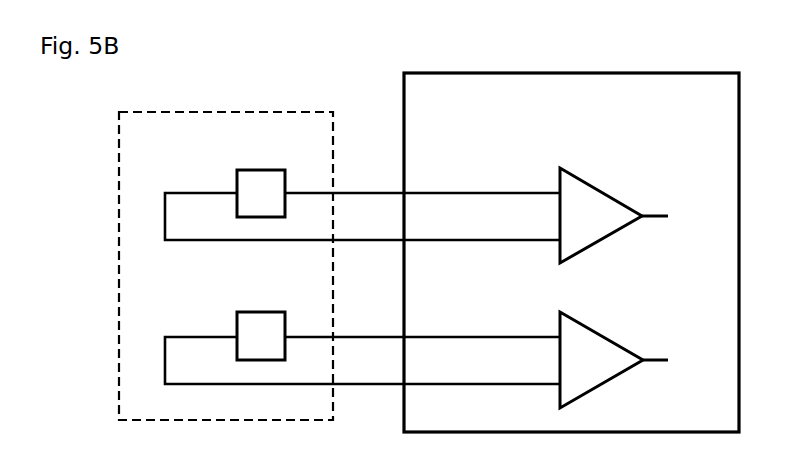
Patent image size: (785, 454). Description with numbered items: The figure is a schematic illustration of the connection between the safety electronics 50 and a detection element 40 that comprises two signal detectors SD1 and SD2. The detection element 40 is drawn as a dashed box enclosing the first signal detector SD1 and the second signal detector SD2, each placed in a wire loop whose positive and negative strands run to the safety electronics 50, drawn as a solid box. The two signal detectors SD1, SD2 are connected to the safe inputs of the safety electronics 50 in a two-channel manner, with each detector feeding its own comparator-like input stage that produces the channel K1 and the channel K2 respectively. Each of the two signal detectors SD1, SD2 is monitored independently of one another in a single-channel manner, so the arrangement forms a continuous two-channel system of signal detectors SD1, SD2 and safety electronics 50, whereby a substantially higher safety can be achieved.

The detection element 40 is at (120, 248).
The safety electronics 50 is at (571, 252).
The first signal detector SD1 is at (266, 174).
The second signal detector SD2 is at (266, 318).
The first channel K1 is at (640, 215).
The second channel K2 is at (640, 360).